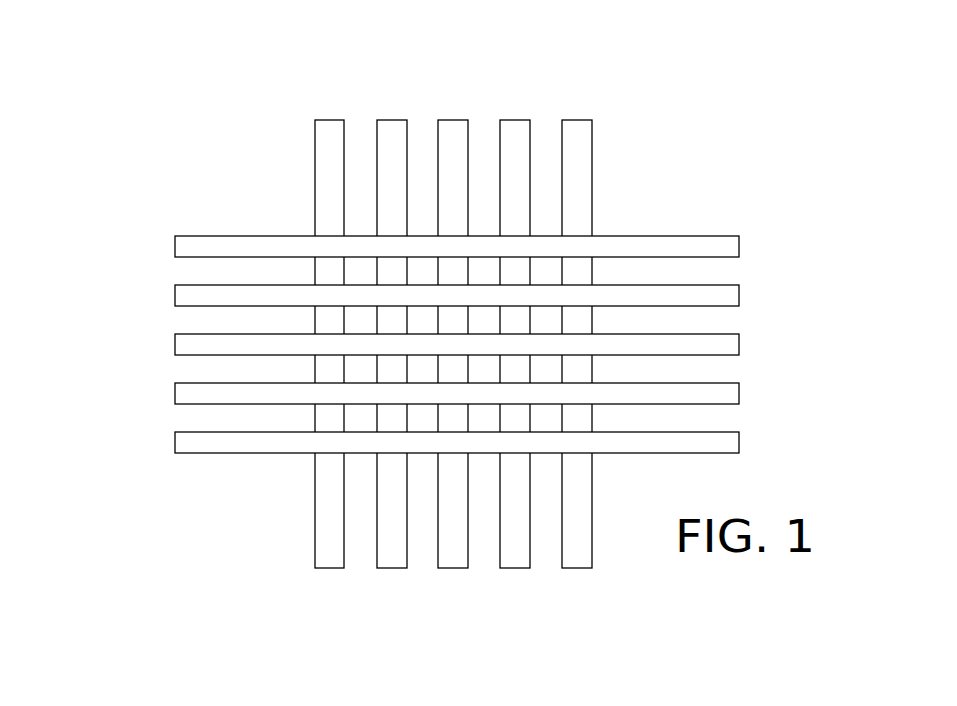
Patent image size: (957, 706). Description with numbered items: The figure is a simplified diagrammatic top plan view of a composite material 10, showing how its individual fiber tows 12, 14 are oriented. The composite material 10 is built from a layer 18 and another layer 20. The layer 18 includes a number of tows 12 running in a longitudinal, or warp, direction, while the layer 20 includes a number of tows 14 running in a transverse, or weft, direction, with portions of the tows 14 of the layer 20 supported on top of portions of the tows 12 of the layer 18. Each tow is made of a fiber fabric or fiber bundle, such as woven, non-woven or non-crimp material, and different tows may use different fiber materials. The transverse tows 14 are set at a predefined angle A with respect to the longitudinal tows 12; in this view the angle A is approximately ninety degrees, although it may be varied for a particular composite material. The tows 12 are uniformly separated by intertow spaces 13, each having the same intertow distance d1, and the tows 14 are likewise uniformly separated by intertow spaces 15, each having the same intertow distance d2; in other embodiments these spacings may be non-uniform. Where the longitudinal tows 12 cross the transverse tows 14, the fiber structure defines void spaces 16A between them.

The composite material 10 is at (210, 158).
The longitudinal tows 12 is at (577, 113).
The intertow spaces 13 is at (357, 556).
The transverse tows 14 is at (163, 442).
The intertow spaces 15 is at (725, 270).
The void spaces 16A is at (358, 272).
The layer 18 is at (614, 160).
The layer 20 is at (262, 462).
The predefined angle A is at (596, 187).
The intertow distance d1 is at (530, 573).
The intertow distance d2 is at (746, 431).